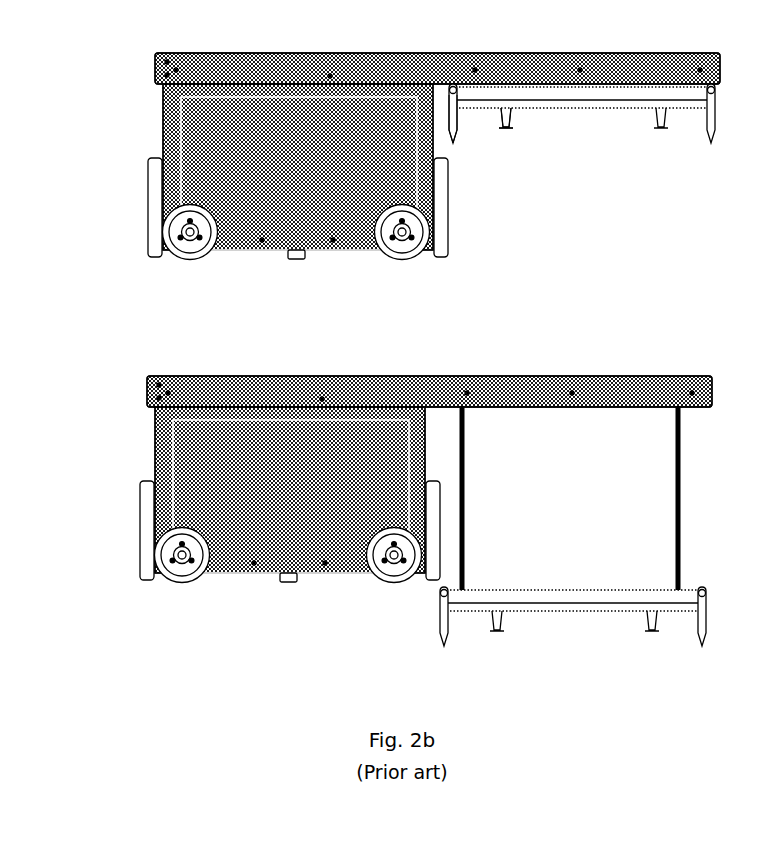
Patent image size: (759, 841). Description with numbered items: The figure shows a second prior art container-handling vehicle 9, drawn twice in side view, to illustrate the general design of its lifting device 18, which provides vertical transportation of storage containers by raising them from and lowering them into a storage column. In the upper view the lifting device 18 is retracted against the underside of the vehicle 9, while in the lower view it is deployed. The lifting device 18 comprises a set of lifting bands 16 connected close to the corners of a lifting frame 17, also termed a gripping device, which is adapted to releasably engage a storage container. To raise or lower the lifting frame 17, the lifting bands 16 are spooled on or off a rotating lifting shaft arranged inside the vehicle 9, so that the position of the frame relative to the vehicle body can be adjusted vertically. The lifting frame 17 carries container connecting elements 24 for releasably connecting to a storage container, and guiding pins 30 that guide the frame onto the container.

The container-handling vehicle 9 is at (112, 247).
The lifting device 18 is at (627, 137).
The guiding pins 30 is at (455, 133).
The container connecting elements 24 is at (505, 127).
The lifting bands 16 is at (464, 540).
The lifting frame 17 is at (623, 608).